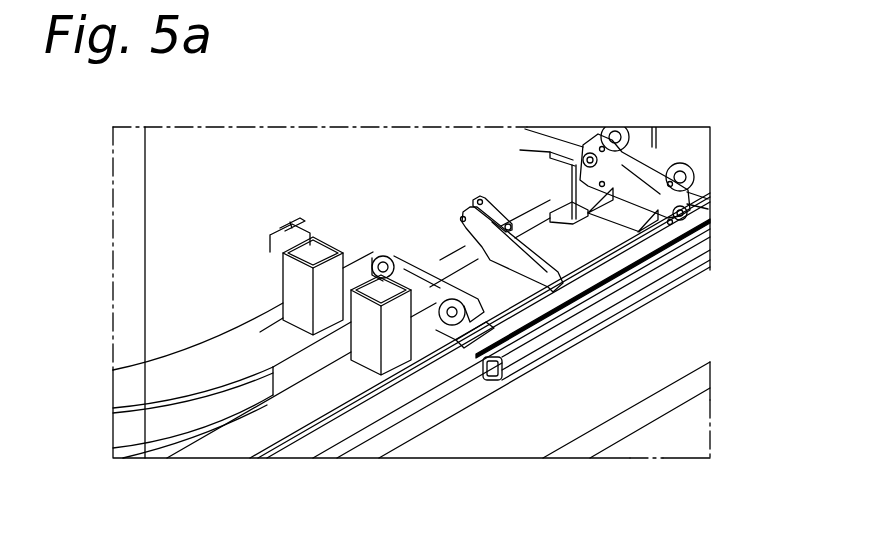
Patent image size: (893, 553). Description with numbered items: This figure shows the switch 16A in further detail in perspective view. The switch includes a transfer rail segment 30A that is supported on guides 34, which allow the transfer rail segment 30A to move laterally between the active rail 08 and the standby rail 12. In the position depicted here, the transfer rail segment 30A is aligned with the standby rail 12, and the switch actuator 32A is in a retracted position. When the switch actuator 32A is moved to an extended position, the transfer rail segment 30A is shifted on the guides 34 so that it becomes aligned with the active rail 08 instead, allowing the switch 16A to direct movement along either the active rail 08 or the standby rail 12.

The active rail 08 is at (203, 345).
The standby rail 12 is at (330, 423).
The guides 34 is at (433, 332).
The switch actuator 32A is at (577, 282).
The transfer rail segment 30A is at (620, 258).
The switch 16A is at (718, 165).